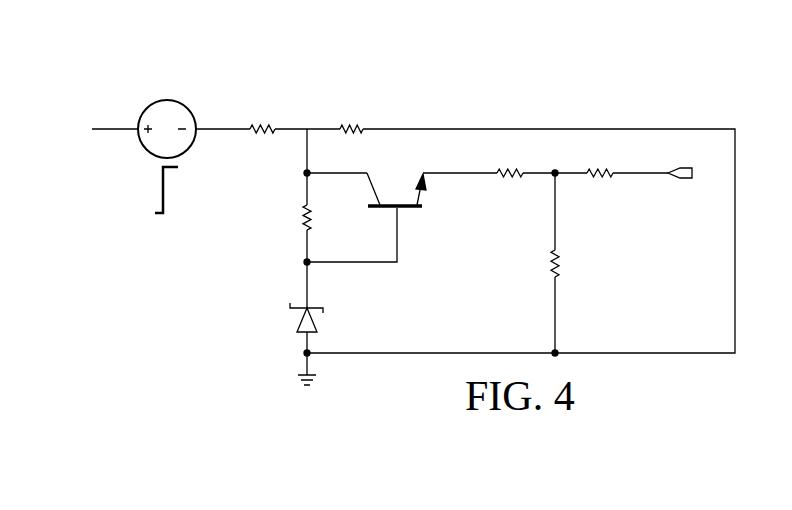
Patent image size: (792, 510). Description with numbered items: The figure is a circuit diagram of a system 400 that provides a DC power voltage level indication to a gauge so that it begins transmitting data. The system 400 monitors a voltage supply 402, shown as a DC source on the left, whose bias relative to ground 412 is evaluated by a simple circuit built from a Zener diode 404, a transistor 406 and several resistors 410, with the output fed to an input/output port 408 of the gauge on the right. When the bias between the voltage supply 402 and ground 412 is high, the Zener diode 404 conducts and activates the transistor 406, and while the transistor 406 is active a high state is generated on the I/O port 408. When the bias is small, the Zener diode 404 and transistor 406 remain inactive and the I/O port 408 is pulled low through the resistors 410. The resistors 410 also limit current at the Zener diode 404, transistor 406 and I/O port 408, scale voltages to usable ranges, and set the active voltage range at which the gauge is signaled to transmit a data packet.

The system 400 is at (578, 82).
The voltage supply 402 is at (146, 116).
The Zener diode 404 is at (296, 316).
The transistor 406 is at (420, 210).
The I/O port 408 is at (684, 180).
The resistors 410 is at (264, 125).
The ground 412 is at (296, 382).